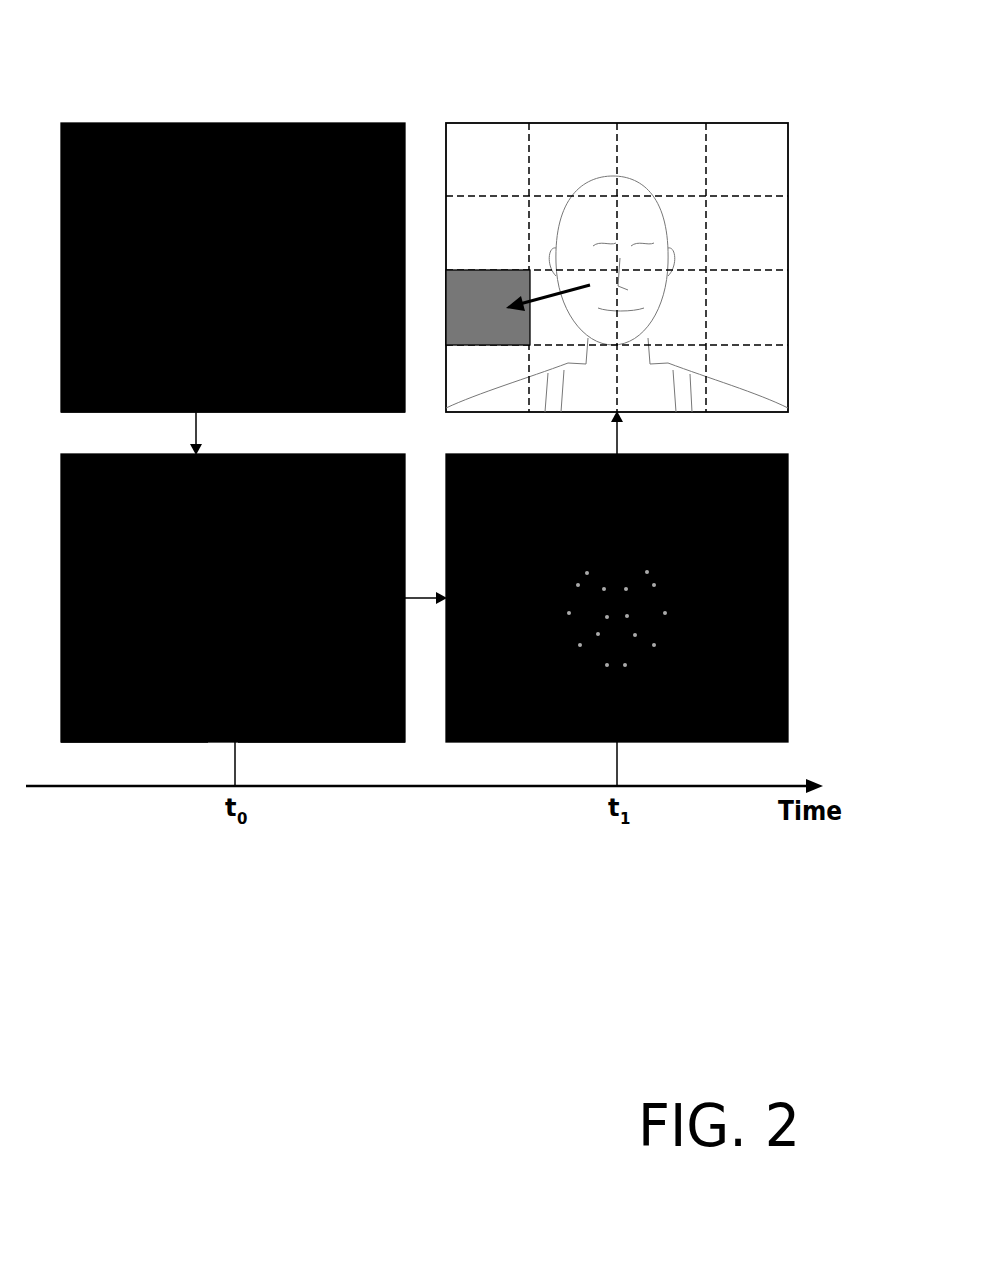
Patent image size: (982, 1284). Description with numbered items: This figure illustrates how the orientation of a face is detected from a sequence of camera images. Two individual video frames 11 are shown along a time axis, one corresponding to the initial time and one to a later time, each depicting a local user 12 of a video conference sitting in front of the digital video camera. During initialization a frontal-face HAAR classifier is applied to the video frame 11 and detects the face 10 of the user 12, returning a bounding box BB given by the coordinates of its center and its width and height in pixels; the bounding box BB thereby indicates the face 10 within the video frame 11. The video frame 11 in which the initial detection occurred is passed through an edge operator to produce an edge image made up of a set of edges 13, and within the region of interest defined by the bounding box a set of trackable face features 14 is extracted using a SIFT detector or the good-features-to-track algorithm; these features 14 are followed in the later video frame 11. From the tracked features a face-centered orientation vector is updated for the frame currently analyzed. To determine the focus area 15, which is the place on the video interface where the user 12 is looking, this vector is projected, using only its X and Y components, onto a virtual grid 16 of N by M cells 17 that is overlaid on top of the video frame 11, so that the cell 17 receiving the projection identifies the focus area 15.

The face 10 is at (154, 115).
The video frame 11 is at (108, 115).
The local user 12 is at (208, 115).
The edge 13 is at (162, 734).
The face feature 14 is at (288, 734).
The focus area 15 is at (463, 265).
The virtual grid 16 is at (521, 176).
The cell 17 is at (737, 285).
The bounding box BB is at (253, 115).